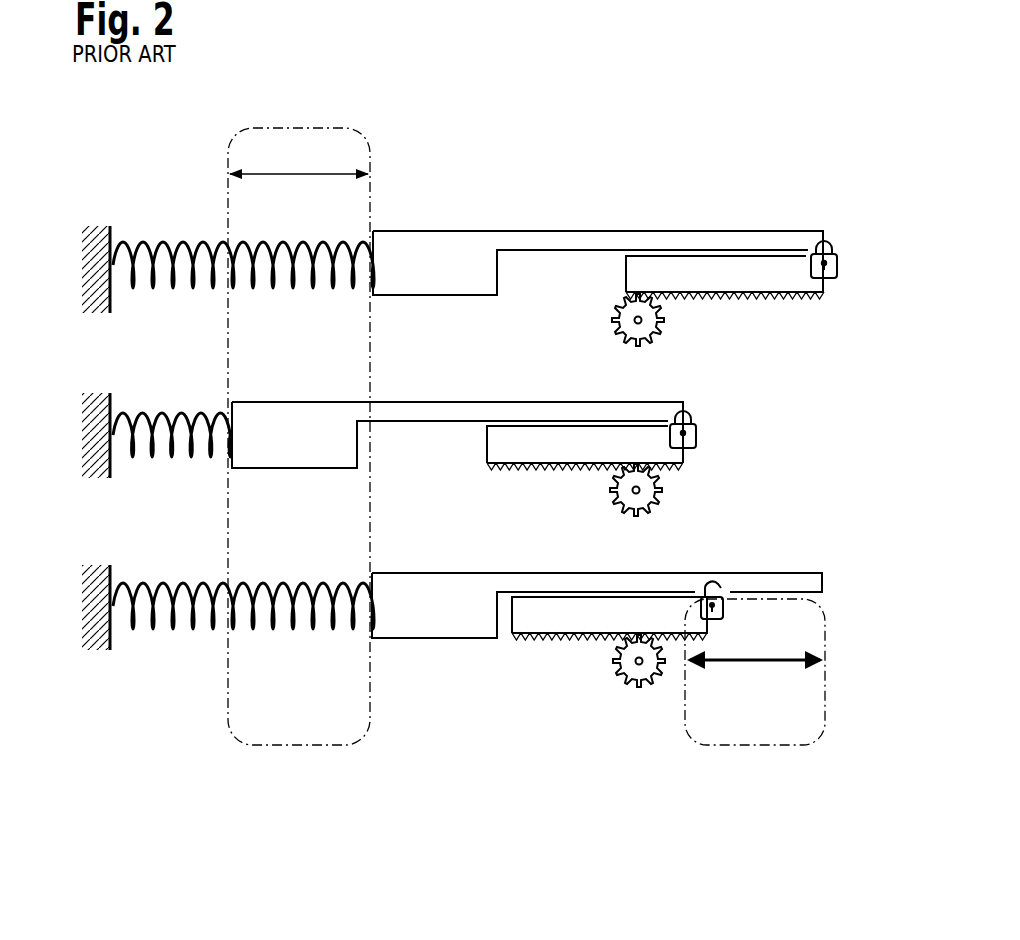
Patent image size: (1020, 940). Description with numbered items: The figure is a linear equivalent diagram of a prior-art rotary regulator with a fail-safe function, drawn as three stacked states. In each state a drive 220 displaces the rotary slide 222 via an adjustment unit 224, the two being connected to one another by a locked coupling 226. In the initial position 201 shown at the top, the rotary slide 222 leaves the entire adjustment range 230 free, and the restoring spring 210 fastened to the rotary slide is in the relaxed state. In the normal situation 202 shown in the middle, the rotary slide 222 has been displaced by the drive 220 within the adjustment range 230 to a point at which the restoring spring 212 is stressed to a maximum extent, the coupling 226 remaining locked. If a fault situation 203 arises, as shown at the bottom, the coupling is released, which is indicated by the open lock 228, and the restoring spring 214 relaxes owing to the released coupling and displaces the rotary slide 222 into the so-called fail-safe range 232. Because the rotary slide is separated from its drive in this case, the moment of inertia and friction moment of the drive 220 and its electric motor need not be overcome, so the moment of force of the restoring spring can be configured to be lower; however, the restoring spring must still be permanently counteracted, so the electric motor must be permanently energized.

The initial position 201 is at (66, 235).
The normal situation 202 is at (66, 404).
The fault situation 203 is at (66, 576).
The restoring spring 210 is at (234, 223).
The restoring spring 212 is at (163, 393).
The restoring spring 214 is at (234, 566).
The drive 220 is at (588, 508).
The rotary slide 222 is at (527, 434).
The adjustment unit 224 is at (658, 448).
The locked coupling 226 is at (786, 307).
The released coupling 228 is at (755, 569).
The adjustment range 230 is at (299, 414).
The fail-safe range 232 is at (755, 707).